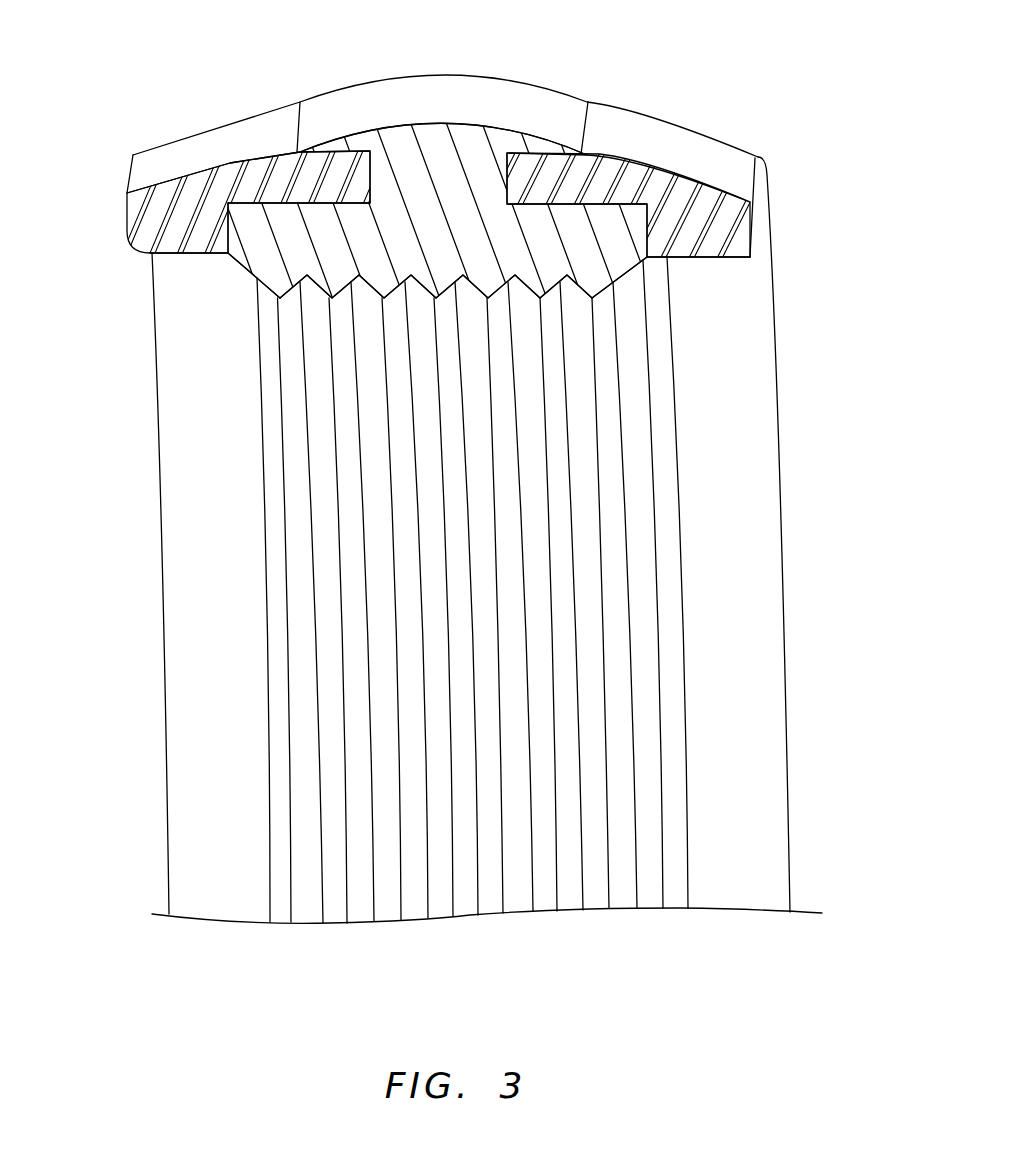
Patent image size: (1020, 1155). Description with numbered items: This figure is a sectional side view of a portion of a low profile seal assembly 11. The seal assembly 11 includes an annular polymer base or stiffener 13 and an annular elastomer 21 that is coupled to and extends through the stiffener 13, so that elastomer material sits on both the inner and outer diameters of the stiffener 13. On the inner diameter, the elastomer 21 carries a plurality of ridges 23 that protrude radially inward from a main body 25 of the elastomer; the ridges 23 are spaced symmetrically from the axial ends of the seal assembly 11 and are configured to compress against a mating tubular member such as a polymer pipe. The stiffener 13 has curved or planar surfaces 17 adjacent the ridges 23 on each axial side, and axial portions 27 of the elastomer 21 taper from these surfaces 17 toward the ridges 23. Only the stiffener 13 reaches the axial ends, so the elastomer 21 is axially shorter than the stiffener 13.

The seal assembly 11 is at (784, 72).
The stiffener 13 is at (132, 212).
The curved or planar surfaces 17 is at (190, 260).
The elastomer 21 is at (479, 74).
The ridges 23 is at (332, 290).
The main body 25 is at (257, 227).
The axial portions 27 is at (247, 266).